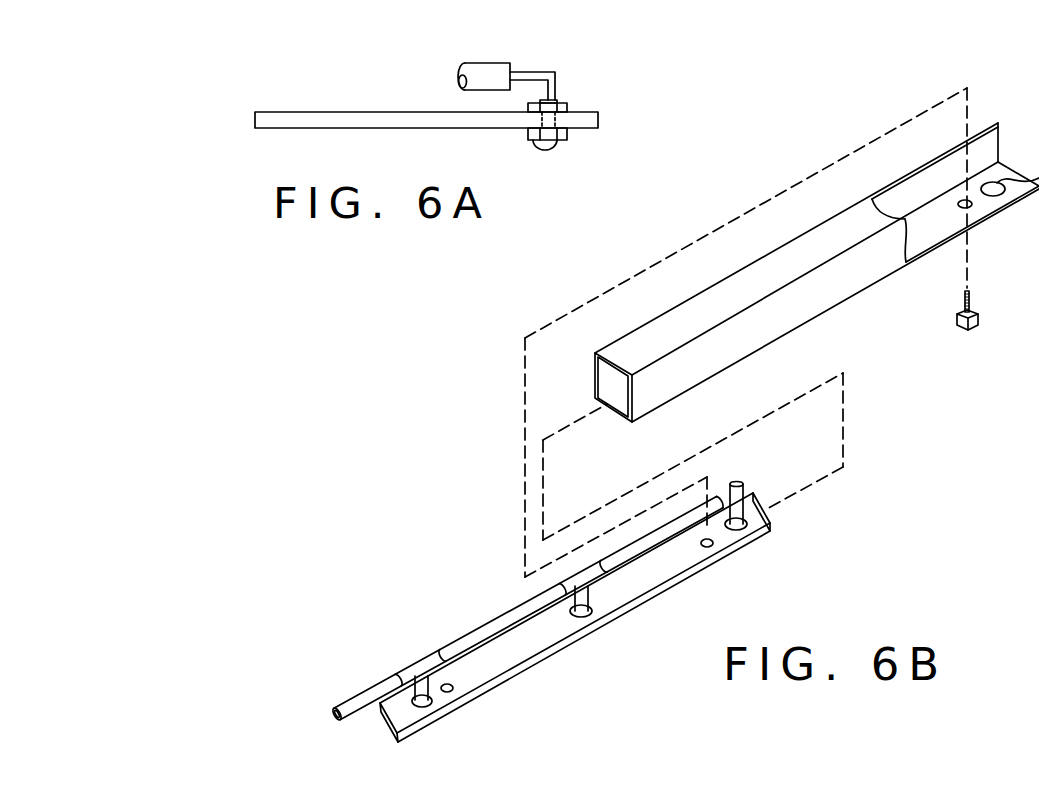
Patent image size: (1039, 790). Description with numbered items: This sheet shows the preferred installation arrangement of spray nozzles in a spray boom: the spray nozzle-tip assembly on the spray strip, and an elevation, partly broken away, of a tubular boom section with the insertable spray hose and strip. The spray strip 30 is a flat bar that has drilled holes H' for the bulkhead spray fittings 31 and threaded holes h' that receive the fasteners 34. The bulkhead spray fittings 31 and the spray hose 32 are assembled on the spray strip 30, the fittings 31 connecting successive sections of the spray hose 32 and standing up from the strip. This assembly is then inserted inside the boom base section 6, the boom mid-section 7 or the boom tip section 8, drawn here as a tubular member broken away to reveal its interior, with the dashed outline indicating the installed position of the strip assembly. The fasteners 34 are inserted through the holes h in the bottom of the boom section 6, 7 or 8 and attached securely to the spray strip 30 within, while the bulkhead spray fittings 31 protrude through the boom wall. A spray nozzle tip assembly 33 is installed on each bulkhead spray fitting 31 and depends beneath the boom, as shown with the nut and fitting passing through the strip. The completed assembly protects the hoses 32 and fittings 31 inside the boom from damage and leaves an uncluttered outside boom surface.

In FIG. 6B, the boom base section 6 is at (817, 272).
In FIG. 6B, the boom mid-section 7 is at (817, 272).
In FIG. 6B, the boom tip section 8 is at (743, 297).
In FIG. 6A, the spray strip 30 is at (364, 110).
In FIG. 6B, the spray strip 30 is at (648, 602).
In FIG. 6A, the bulkhead spray fitting 31 is at (587, 76).
In FIG. 6B, the bulkhead spray fitting 31 is at (422, 662).
In FIG. 6B, the spray hose 32 is at (483, 625).
In FIG. 6A, the spray nozzle tip assembly 33 is at (556, 141).
In FIG. 6B, the fastener 34 is at (967, 330).
In FIG. 6B, the hole in bottom of boom section h is at (984, 223).
In FIG. 6B, the threaded hole h' is at (723, 565).
In FIG. 6B, the drilled hole H' is at (773, 515).